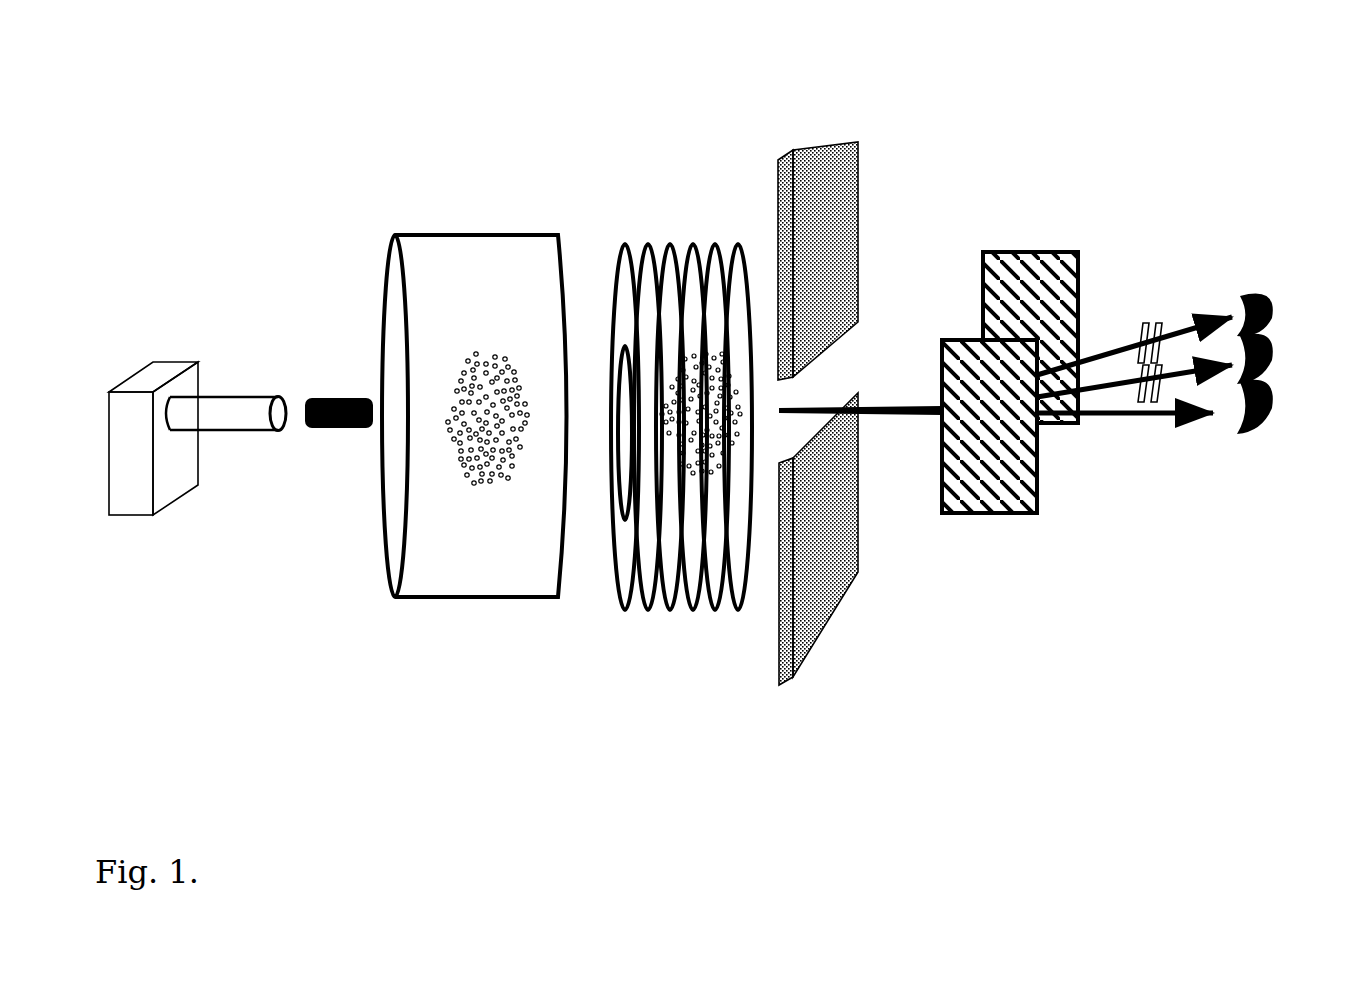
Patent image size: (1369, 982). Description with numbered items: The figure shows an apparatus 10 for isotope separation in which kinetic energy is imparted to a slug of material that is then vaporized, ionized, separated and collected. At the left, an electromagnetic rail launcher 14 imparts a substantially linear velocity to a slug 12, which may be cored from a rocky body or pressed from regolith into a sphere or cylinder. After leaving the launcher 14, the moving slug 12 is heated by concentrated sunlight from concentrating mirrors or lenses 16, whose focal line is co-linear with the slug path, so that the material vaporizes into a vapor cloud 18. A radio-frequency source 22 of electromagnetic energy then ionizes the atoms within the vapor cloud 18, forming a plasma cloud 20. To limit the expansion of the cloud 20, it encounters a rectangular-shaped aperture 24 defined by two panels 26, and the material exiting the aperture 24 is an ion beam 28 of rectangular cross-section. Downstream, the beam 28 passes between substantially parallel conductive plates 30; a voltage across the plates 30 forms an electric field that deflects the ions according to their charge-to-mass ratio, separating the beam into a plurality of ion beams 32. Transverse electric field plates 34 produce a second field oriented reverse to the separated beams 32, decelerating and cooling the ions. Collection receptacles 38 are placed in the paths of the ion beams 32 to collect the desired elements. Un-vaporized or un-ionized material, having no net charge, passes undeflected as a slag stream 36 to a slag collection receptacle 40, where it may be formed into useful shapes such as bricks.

The apparatus 10 is at (228, 90).
The slug 12 is at (328, 382).
The electromagnetic rail launcher 14 is at (145, 378).
The concentrating mirrors or lenses 16 is at (393, 235).
The vapor cloud 18 is at (465, 353).
The plasma cloud 20 is at (693, 355).
The radio-frequency source 22 is at (653, 225).
The aperture 24 is at (866, 330).
The panels 26 is at (858, 142).
The ion beam 28 is at (906, 418).
The parallel plates 30 is at (1040, 245).
The separated ion beams 32 is at (1105, 348).
The transverse electric field plates 34 is at (1157, 303).
The slag stream 36 is at (1107, 420).
The collection receptacles 38 is at (1280, 300).
The slag collection receptacle 40 is at (1262, 403).